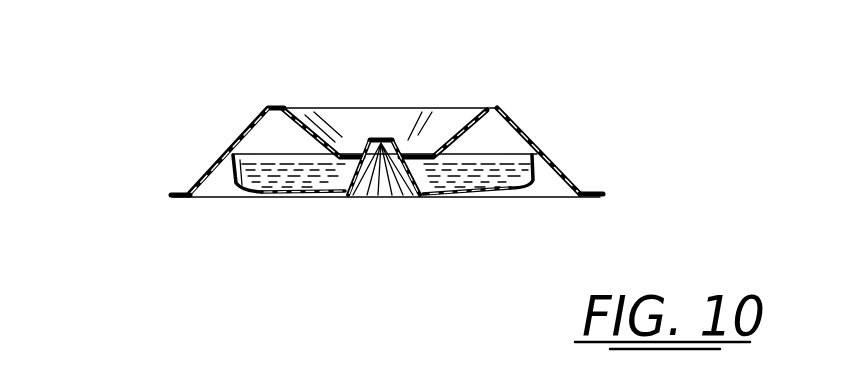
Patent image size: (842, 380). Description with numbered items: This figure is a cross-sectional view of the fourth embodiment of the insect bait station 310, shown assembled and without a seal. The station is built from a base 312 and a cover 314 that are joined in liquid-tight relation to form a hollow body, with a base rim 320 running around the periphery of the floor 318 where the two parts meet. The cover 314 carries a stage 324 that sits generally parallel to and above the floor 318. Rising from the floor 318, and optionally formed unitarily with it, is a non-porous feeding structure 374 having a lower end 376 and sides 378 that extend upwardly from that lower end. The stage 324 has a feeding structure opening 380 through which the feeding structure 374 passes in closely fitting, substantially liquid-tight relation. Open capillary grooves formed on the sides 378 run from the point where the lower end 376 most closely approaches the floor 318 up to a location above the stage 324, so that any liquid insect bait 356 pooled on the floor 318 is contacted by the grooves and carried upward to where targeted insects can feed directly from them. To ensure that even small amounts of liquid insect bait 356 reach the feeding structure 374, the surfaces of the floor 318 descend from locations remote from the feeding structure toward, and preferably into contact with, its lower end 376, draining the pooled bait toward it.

The insect bait station 310 is at (160, 152).
The base 312 is at (233, 198).
The cover 314 is at (518, 125).
The floor 318 is at (257, 183).
The base rim 320 is at (593, 196).
The stage 324 is at (352, 157).
The liquid insect bait 356 is at (505, 172).
The feeding structure 374 is at (305, 200).
The lower end 376 is at (430, 197).
The sides 378 is at (470, 195).
The feeding structure opening 380 is at (402, 143).